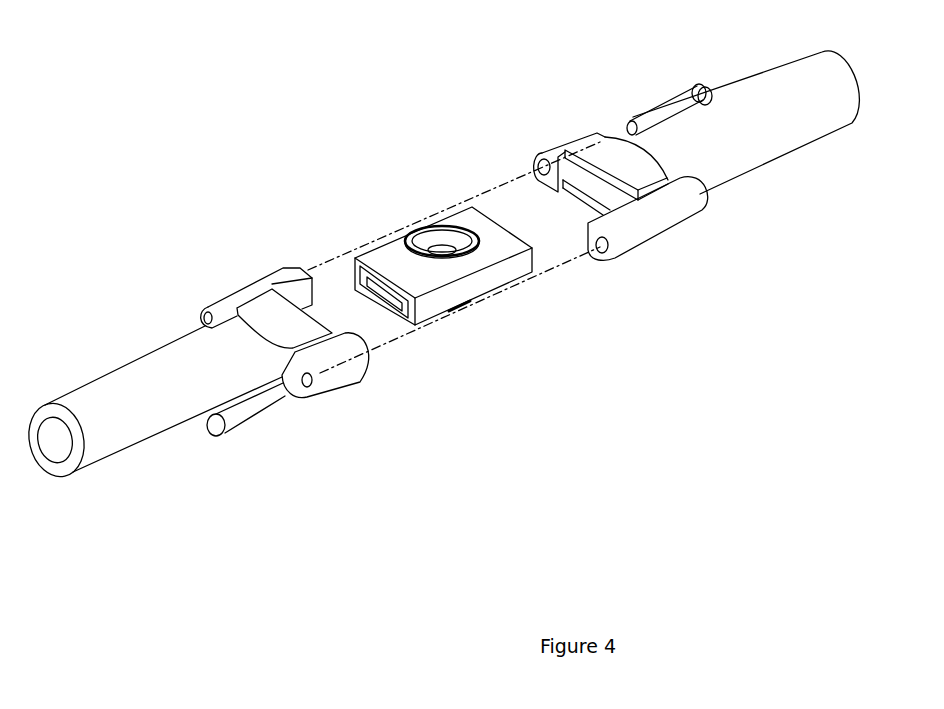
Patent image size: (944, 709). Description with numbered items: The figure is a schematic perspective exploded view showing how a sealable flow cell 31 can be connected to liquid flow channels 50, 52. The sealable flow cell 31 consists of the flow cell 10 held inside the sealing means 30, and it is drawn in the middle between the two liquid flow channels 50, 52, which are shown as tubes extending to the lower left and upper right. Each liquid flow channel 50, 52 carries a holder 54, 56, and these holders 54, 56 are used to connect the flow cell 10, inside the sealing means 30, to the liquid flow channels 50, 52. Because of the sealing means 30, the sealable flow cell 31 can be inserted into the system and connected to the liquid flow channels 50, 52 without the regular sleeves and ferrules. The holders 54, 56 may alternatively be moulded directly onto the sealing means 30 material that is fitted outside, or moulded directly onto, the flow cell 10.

The flow cell 10 is at (415, 325).
The sealing means 30 is at (483, 283).
The sealable flow cell 31 is at (362, 214).
The liquid flow channel 50 is at (145, 410).
The liquid flow channel 52 is at (797, 102).
The holder 54 is at (249, 282).
The holder 56 is at (562, 147).